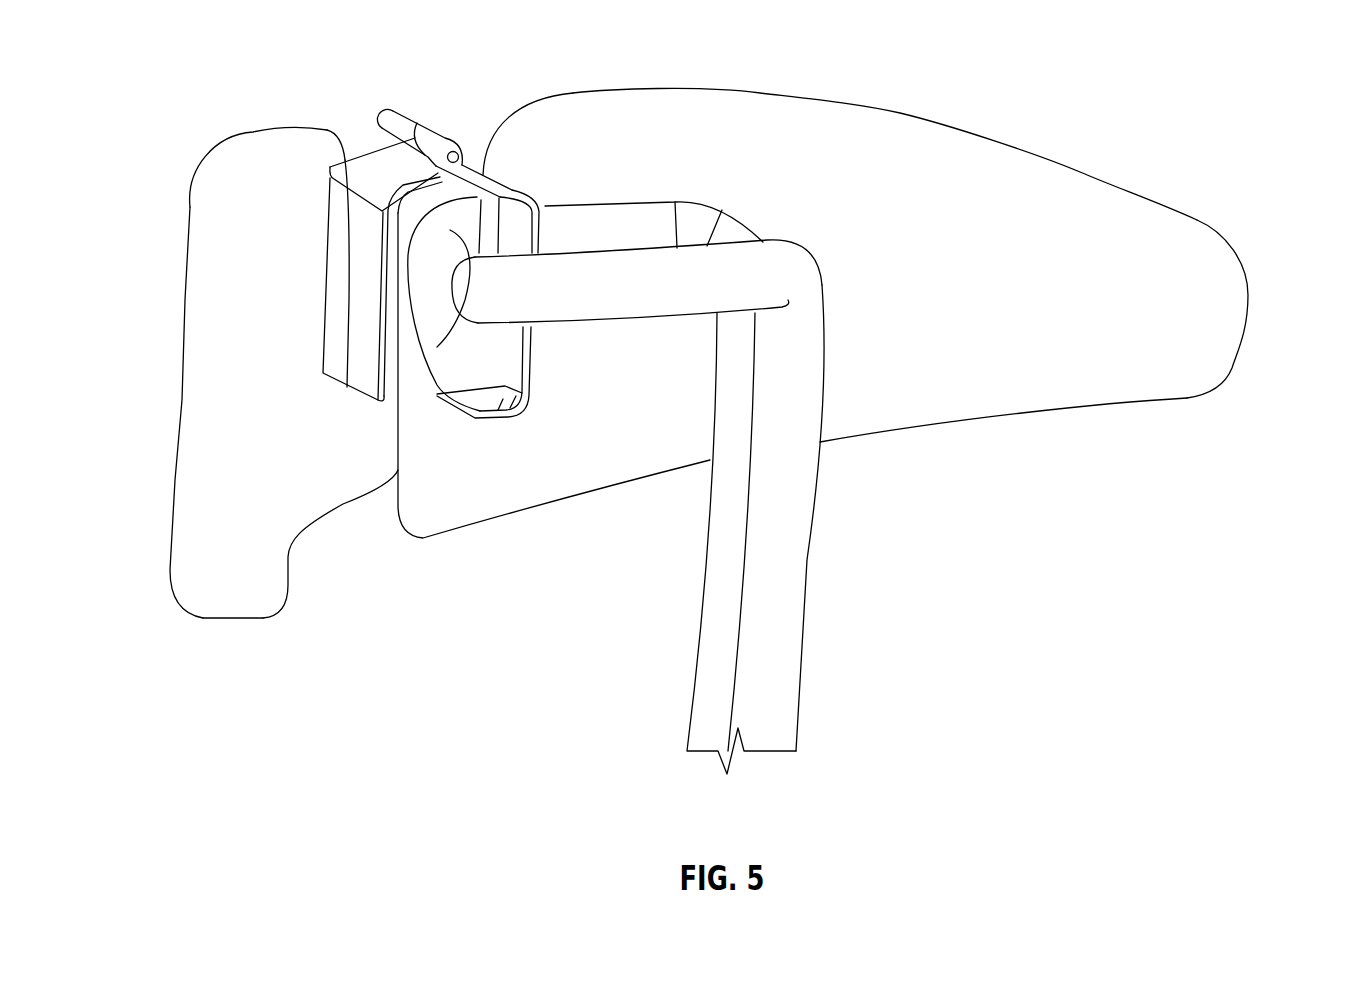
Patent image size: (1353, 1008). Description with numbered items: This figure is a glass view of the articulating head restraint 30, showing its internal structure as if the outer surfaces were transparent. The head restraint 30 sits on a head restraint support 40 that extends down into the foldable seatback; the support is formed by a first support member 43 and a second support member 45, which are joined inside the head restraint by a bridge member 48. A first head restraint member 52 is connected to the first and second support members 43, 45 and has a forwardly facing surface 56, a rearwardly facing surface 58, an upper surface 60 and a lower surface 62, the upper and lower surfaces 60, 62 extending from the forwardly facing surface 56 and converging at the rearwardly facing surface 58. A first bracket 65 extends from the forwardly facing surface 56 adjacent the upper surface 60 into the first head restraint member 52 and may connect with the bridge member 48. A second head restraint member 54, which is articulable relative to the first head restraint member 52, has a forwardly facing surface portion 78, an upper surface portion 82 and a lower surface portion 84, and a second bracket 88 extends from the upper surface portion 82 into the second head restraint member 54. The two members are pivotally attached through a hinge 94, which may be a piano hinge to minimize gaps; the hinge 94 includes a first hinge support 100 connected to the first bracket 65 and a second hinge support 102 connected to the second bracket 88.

The head restraint 30 is at (1127, 105).
The head restraint support 40 is at (833, 692).
The first support member 43 is at (708, 642).
The second support member 45 is at (786, 576).
The bridge member 48 is at (467, 370).
The first head restraint member 52 is at (925, 270).
The second head restraint member 54 is at (247, 350).
The forwardly facing surface 56 is at (481, 120).
The rearwardly facing surface 58 is at (1243, 330).
The upper surface 60 is at (897, 112).
The lower surface 62 is at (1002, 420).
The first bracket 65 is at (515, 217).
The forwardly facing surface portion 78 is at (170, 515).
The upper surface portion 82 is at (284, 127).
The lower surface portion 84 is at (240, 625).
The second bracket 88 is at (347, 277).
The hinge 94 is at (395, 120).
The first hinge support 100 is at (483, 170).
The second hinge support 102 is at (392, 183).